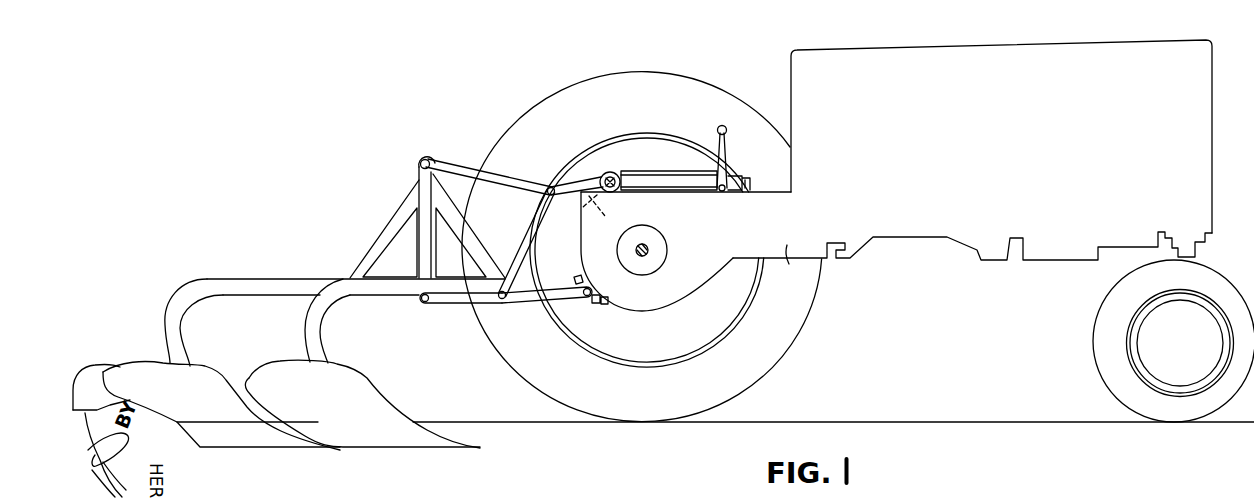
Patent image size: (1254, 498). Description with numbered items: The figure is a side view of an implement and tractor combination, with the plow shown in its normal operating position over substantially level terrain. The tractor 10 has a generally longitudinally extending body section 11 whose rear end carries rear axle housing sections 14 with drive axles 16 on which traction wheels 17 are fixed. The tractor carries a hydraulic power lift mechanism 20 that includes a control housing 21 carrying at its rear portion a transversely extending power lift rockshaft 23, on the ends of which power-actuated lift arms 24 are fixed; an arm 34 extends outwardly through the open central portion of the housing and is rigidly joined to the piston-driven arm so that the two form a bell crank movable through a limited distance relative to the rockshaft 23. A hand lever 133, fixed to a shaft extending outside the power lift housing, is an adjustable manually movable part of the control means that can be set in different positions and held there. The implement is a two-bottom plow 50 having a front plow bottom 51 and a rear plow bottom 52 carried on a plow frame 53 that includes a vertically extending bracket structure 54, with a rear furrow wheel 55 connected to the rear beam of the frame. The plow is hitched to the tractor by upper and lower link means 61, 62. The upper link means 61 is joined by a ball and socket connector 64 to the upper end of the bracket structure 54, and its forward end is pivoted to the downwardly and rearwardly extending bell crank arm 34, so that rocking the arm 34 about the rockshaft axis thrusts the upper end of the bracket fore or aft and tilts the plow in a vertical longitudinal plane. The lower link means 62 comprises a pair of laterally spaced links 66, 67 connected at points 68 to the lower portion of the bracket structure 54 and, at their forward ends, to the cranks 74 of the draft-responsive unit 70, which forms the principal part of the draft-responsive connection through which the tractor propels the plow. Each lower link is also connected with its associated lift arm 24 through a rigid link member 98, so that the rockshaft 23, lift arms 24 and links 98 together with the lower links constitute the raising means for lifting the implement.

The tractor 10 is at (1017, 40).
The tractor body section 11 is at (972, 262).
The rear axle housing section 14 is at (655, 240).
The drive axle 16 is at (647, 255).
The traction wheel 17 is at (702, 92).
The hydraulic power lift mechanism 20 is at (657, 166).
The control housing 21 is at (688, 176).
The power lift rockshaft 23 is at (610, 170).
The lift arm 24 is at (571, 186).
The hand lever 133 is at (727, 153).
The bell crank arm 34 is at (602, 217).
The plow 50 is at (228, 261).
The front plow bottom 51 is at (372, 403).
The rear plow bottom 52 is at (218, 382).
The plow frame 53 is at (307, 276).
The bracket structure 54 is at (391, 213).
The rear furrow wheel 55 is at (96, 373).
The upper link means 61 is at (498, 176).
The lower link means 62 is at (507, 306).
The ball and socket connector 64 is at (428, 158).
The lower link 66 is at (463, 297).
The lower link 67 is at (545, 295).
The connection point 68 is at (424, 301).
The draft-responsive unit 70 is at (607, 309).
The crank 74 is at (584, 296).
The rigid link member 98 is at (535, 218).